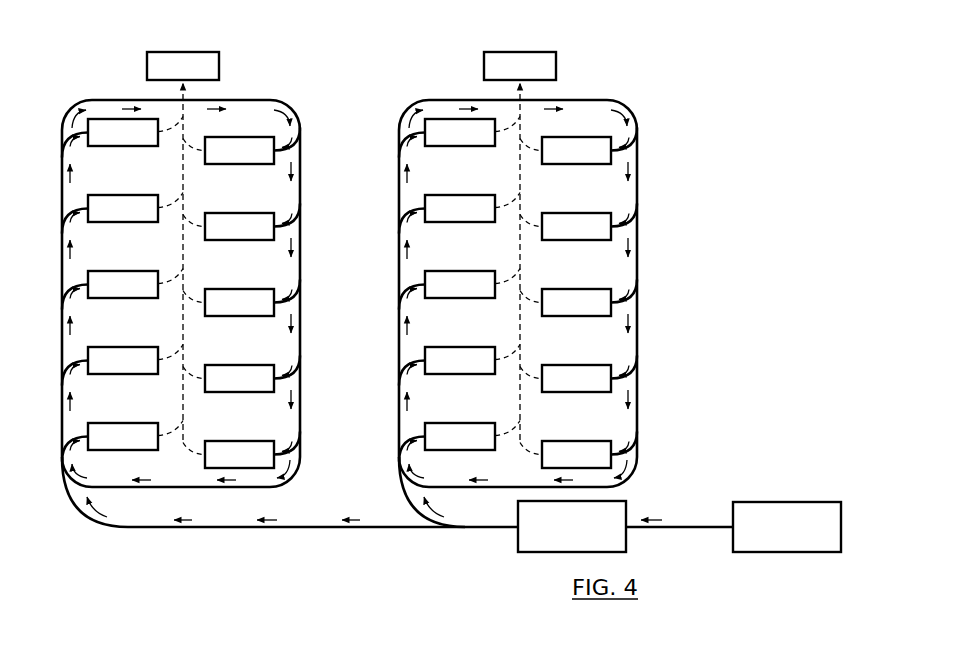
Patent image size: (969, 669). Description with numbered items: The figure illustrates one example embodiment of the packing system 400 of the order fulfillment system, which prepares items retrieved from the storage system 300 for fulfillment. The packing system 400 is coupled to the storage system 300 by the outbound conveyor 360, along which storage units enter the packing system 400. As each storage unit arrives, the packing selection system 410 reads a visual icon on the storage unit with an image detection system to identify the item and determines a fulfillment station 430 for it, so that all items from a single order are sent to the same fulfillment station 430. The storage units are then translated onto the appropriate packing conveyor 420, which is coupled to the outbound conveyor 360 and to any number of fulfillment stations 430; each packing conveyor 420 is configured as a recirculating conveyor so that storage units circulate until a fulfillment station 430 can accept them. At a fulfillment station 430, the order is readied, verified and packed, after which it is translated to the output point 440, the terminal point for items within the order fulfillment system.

The packing system 400 is at (442, 301).
The packing conveyor 420 is at (306, 129).
The fulfillment station 430 is at (614, 358).
The output point 440 is at (466, 60).
The packing selection system 410 is at (471, 545).
The outbound conveyor 360 is at (696, 516).
The storage system 300 is at (787, 527).